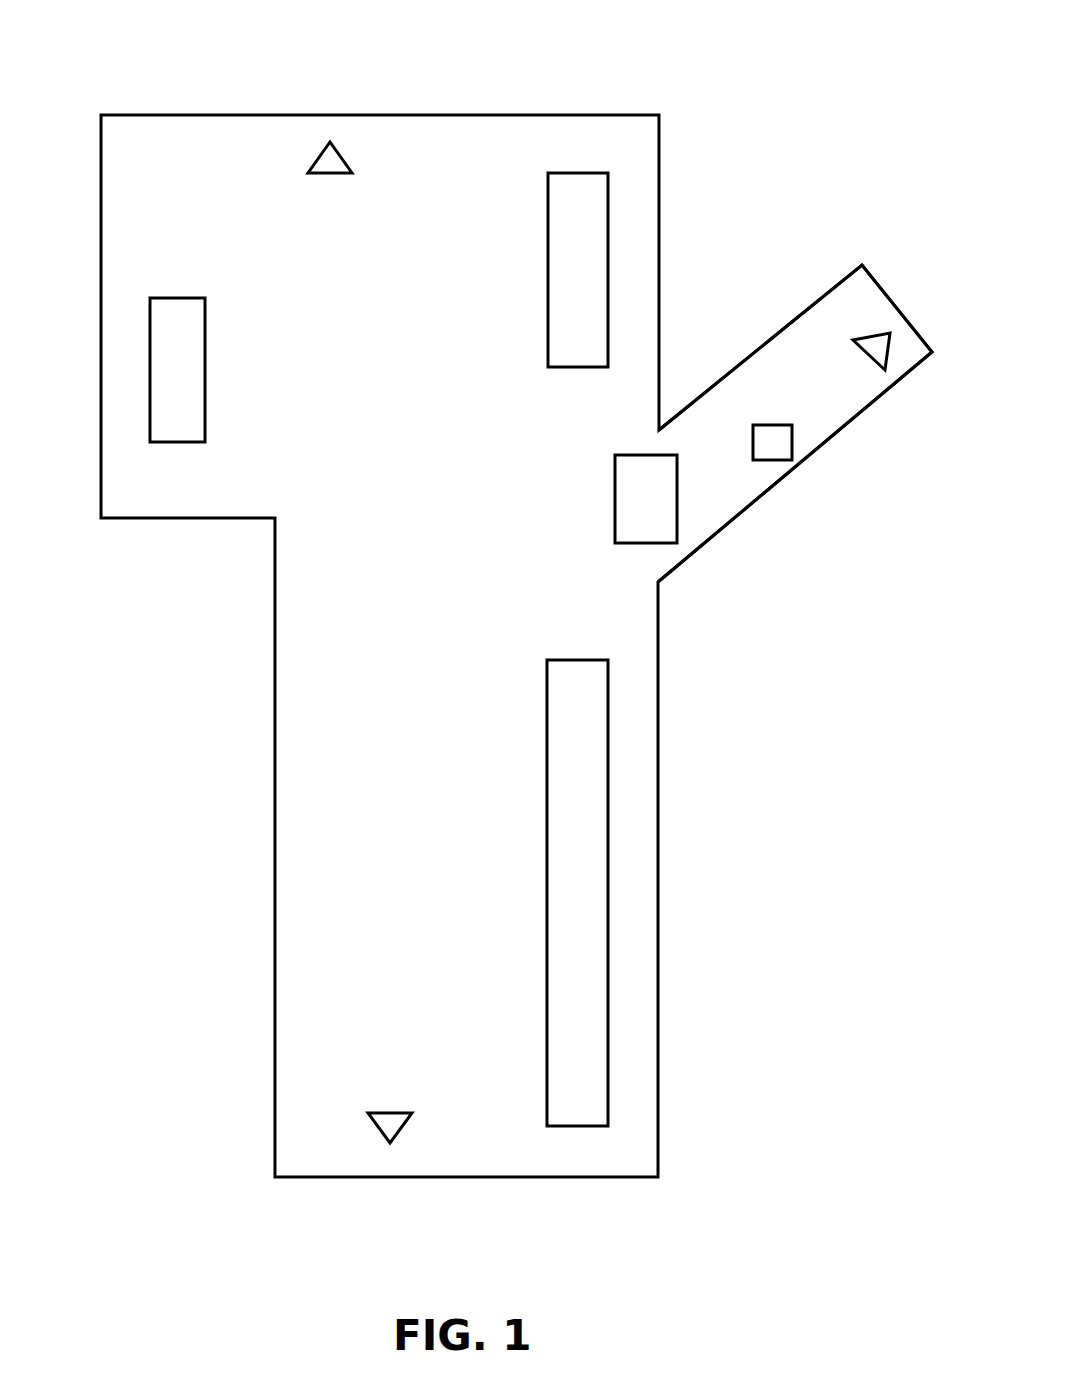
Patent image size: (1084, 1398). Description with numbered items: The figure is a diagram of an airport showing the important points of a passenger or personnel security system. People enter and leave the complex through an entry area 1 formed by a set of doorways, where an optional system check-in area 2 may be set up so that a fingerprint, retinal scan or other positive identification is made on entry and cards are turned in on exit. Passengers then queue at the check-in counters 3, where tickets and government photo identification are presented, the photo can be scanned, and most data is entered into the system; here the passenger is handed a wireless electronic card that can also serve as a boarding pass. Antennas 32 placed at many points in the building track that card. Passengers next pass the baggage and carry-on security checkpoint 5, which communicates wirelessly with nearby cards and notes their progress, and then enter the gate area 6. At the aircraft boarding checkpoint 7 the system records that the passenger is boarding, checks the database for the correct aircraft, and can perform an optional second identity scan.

The entry area 1 is at (197, 162).
The system check-in area 2 is at (168, 413).
The check-in counters 3 is at (595, 232).
The baggage and carry-on security checkpoint 5 is at (633, 503).
The gate area 6 is at (775, 390).
The aircraft boarding checkpoint 7 is at (780, 447).
The antennas 32 is at (343, 142).